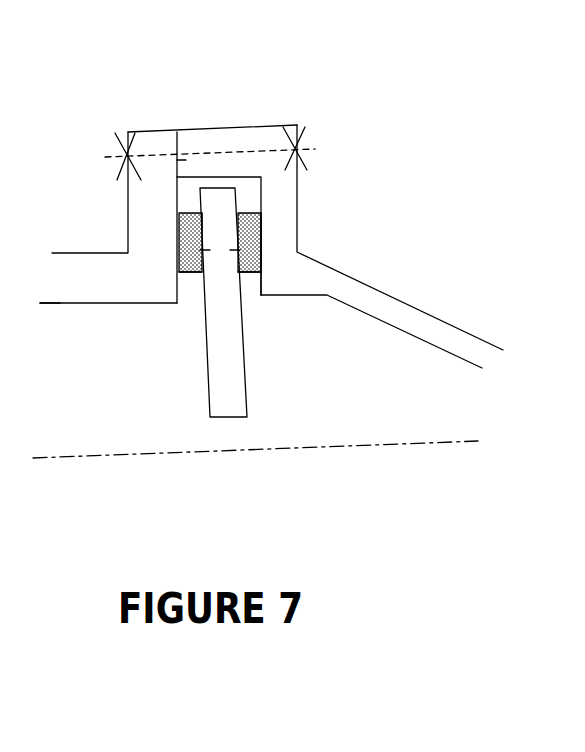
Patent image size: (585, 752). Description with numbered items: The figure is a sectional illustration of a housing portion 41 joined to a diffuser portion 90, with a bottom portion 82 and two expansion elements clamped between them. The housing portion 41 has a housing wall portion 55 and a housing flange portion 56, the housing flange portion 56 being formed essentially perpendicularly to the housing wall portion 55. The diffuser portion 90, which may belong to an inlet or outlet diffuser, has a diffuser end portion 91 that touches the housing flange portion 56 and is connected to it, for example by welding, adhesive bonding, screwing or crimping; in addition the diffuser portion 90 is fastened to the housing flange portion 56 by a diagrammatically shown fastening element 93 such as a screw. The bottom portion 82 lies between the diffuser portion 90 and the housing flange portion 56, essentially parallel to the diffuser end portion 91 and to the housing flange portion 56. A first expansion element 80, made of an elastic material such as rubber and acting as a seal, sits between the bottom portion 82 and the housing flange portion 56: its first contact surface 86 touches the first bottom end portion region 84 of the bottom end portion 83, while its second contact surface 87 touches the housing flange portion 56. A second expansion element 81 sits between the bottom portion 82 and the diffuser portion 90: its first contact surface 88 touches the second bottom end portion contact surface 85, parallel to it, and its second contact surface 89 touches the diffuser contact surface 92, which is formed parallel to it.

The housing portion 41 is at (72, 277).
The housing wall portion 55 is at (84, 292).
The housing flange portion 56 is at (153, 218).
The first expansion element 80 is at (190, 275).
The second expansion element 81 is at (247, 274).
The bottom portion 82 is at (224, 378).
The bottom end portion 83 is at (212, 208).
The first bottom end portion region 84 is at (206, 258).
The second bottom end portion contact surface 85 is at (231, 258).
The first contact surface 86 is at (206, 224).
The second contact surface 87 is at (181, 235).
The first contact surface 88 is at (268, 219).
The second contact surface 89 is at (270, 229).
The diffuser portion 90 is at (460, 321).
The diffuser end portion 91 is at (186, 152).
The diffuser contact surface 92 is at (280, 262).
The fastening element 93 is at (320, 148).